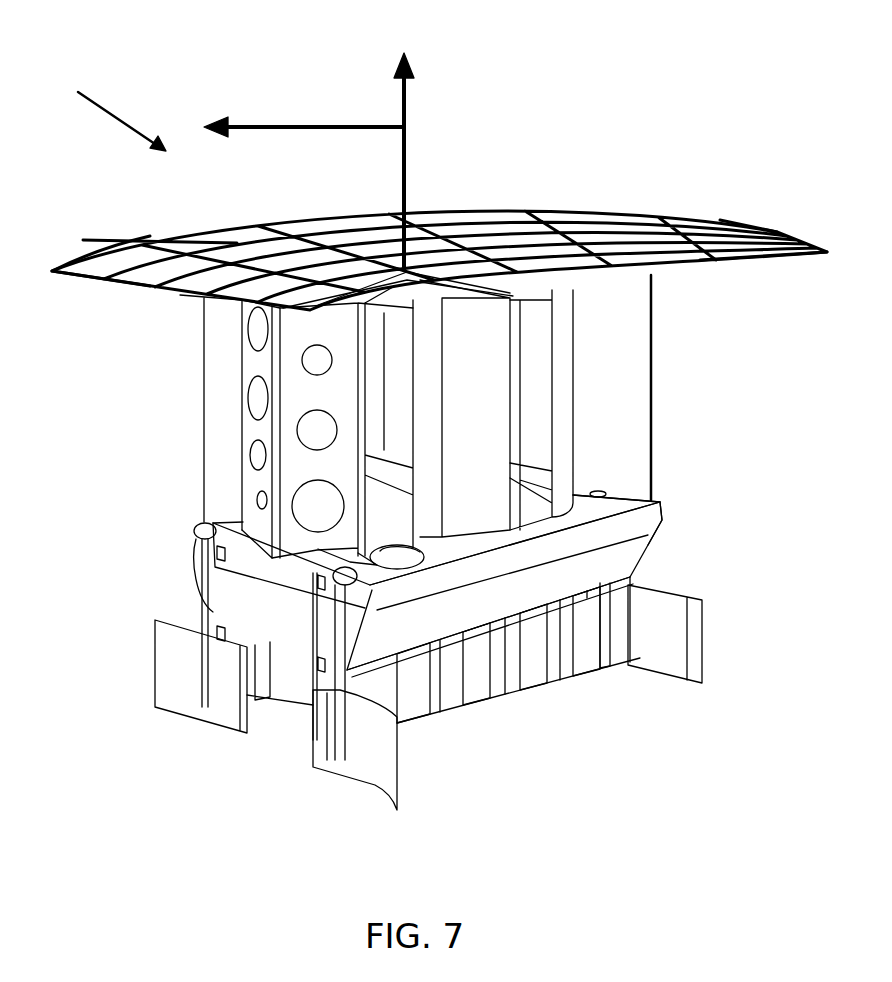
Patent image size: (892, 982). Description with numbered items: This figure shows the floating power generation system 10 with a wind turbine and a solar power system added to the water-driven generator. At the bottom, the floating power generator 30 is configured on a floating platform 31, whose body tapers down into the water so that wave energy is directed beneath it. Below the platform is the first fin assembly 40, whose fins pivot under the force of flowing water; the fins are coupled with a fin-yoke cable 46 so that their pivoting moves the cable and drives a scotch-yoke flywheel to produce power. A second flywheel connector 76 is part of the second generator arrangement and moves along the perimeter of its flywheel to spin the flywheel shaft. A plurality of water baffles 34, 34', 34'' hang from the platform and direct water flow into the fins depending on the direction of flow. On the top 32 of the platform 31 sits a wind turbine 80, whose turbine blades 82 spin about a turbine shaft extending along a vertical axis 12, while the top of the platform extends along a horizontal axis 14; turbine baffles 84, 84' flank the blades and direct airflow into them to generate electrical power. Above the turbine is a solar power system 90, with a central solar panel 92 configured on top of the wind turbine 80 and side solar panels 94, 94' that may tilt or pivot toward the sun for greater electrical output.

The floating power generation system 10 is at (105, 109).
The vertical axis 12 is at (402, 125).
The horizontal axis 14 is at (280, 127).
The floating power generator 30 is at (423, 623).
The floating platform 31 is at (636, 548).
The top of the platform 32 is at (663, 507).
The water baffle 34 is at (355, 791).
The water baffle 34' is at (665, 679).
The water baffle 34'' is at (234, 713).
The first fin assembly 40 is at (505, 667).
The fin-yoke cable 46 is at (310, 668).
The second flywheel connector 76 is at (197, 553).
The wind turbine 80 is at (578, 452).
The turbine blades 82 is at (490, 370).
The turbine baffle 84 is at (153, 412).
The turbine baffle 84' is at (711, 387).
The solar power system 90 is at (558, 218).
The central solar panel 92 is at (406, 268).
The side solar panel 94 is at (101, 215).
The side solar panel 94' is at (738, 202).